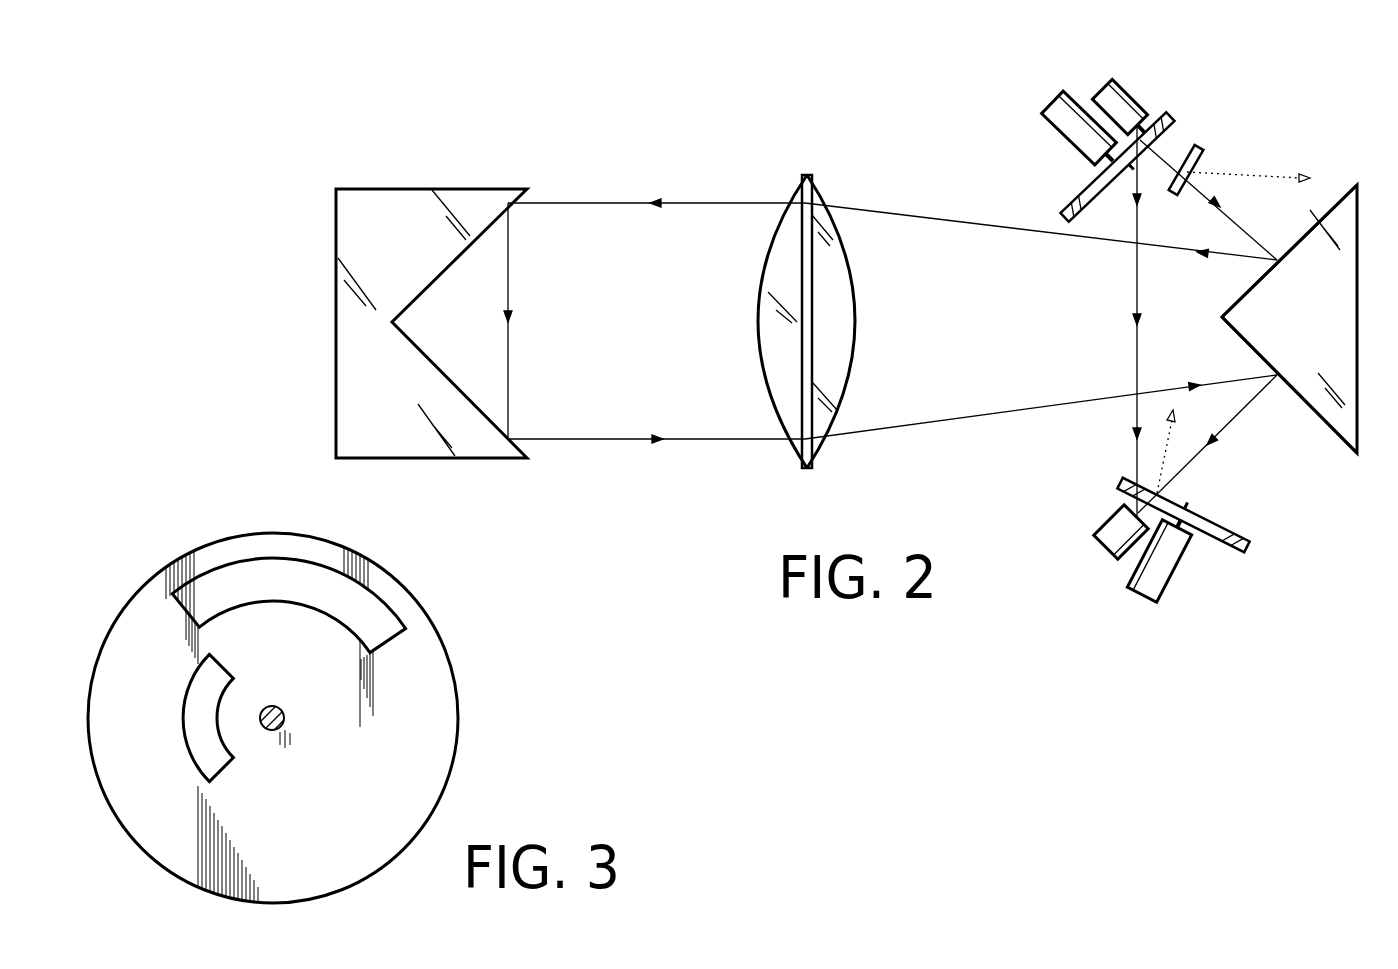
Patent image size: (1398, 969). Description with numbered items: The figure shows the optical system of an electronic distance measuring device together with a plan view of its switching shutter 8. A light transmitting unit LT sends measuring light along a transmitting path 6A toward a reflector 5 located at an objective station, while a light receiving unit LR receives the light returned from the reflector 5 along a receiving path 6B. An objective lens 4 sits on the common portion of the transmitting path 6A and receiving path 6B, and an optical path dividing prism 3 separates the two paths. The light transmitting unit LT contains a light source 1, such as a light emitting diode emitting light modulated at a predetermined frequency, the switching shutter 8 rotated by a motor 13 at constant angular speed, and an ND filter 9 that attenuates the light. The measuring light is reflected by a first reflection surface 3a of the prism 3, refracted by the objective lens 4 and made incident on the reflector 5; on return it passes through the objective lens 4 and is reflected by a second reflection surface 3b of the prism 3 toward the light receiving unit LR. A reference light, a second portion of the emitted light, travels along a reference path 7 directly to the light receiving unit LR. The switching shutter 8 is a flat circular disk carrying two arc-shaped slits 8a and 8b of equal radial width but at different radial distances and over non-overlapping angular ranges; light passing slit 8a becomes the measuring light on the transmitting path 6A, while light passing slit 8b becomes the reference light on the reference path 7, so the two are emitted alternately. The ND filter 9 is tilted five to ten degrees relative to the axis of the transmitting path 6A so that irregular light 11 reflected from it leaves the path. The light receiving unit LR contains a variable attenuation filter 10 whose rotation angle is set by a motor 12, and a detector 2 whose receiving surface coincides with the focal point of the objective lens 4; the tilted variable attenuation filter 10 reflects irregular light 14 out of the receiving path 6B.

In FIG. 2, the light source 1 is at (1124, 94).
In FIG. 2, the detector 2 is at (1106, 525).
In FIG. 2, the optical path dividing prism 3 is at (1348, 349).
In FIG. 2, the first reflection surface 3a is at (1305, 237).
In FIG. 2, the second reflection surface 3b is at (1333, 432).
In FIG. 2, the objective lens 4 is at (845, 320).
In FIG. 2, the reflector 5 is at (390, 205).
In FIG. 2, the transmitting path 6A is at (680, 201).
In FIG. 2, the receiving path 6B is at (640, 442).
In FIG. 2, the reference path 7 is at (1135, 354).
In FIG. 2, the switching shutter 8 is at (1080, 192).
In FIG. 3, the switching shutter 8 is at (447, 730).
In FIG. 3, the slit 8a is at (366, 592).
In FIG. 3, the slit 8b is at (185, 722).
In FIG. 2, the ND filter 9 is at (1194, 150).
In FIG. 2, the variable attenuation filter 10 is at (1224, 528).
In FIG. 2, the irregular light 11 is at (1250, 176).
In FIG. 2, the motor 12 is at (1173, 575).
In FIG. 2, the motor 13 is at (1058, 104).
In FIG. 2, the irregular light 14 is at (1173, 423).
In FIG. 2, the light transmitting unit LT is at (1188, 86).
In FIG. 2, the light receiving unit LR is at (1098, 595).